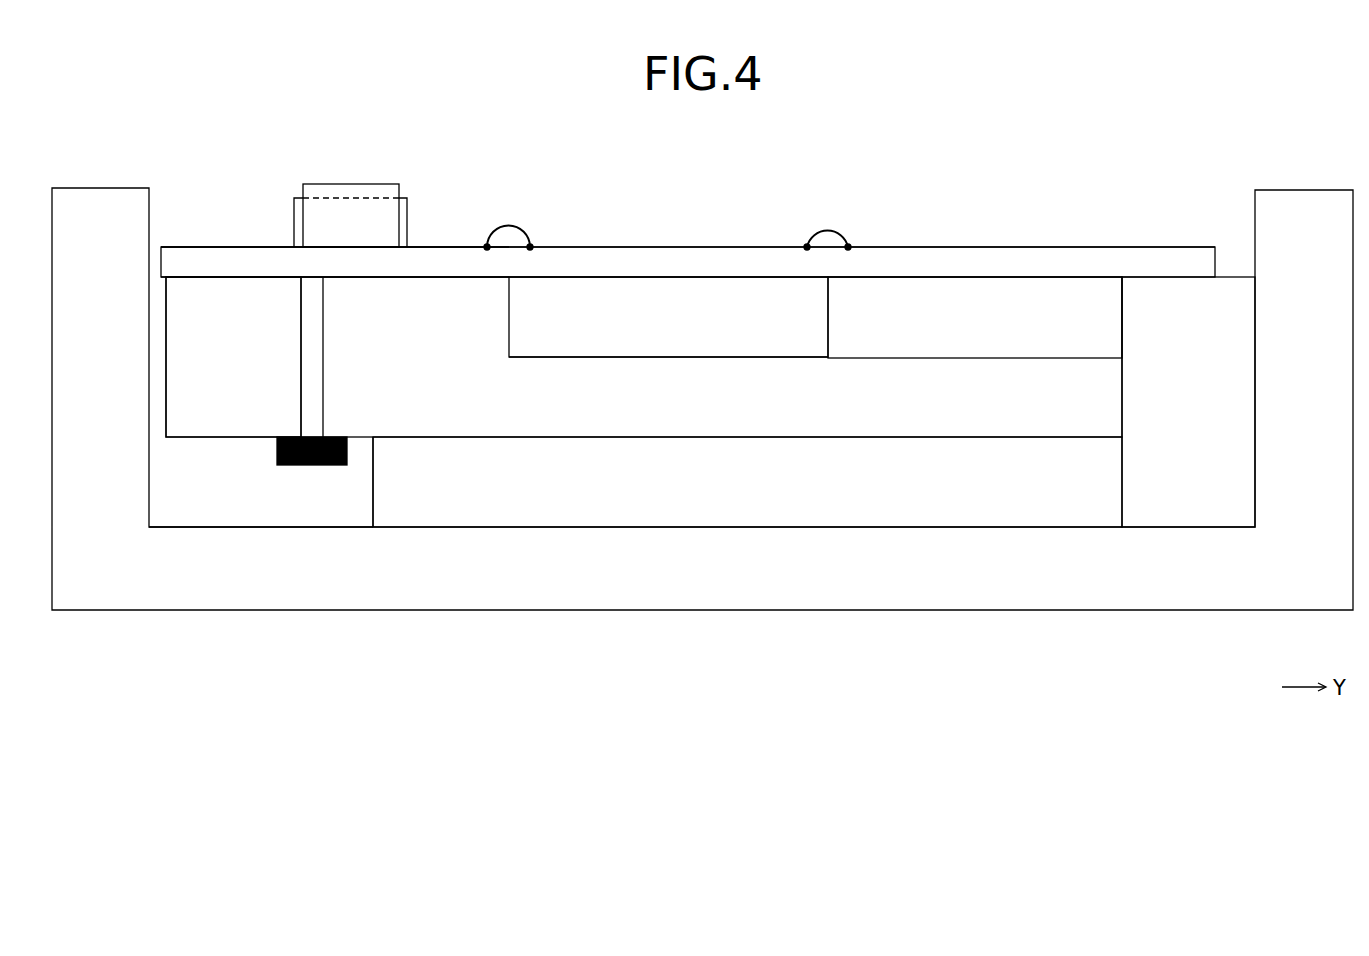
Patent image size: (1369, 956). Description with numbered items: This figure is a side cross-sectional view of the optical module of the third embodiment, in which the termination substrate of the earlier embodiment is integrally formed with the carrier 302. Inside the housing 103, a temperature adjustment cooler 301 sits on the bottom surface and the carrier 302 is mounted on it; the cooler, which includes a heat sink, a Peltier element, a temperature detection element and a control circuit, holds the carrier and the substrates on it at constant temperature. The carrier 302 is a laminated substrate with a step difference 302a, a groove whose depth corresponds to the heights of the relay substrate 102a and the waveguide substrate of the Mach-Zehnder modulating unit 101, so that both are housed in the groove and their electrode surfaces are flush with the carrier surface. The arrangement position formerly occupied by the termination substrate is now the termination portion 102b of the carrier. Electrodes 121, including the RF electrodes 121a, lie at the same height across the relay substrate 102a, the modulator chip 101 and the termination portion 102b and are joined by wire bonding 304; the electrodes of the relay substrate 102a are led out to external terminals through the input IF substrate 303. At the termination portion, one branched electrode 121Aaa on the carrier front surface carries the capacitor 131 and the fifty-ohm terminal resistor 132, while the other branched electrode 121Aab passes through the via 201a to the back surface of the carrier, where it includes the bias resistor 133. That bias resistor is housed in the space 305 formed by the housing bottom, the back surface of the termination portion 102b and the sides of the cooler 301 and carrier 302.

The housing 103 is at (1073, 598).
The temperature adjustment cooler 301 is at (923, 492).
The carrier 302 is at (560, 440).
The step difference 302a is at (785, 357).
The input IF substrate 303 is at (1195, 492).
The wire bonding 304 is at (508, 226).
The space 305 is at (291, 483).
The Mach-Zehnder modulating unit 101 is at (665, 292).
The relay substrate 102a is at (1086, 297).
The termination portion 102b is at (202, 349).
The electrodes 121 is at (888, 213).
The RF electrodes 121a is at (965, 262).
The branched electrode 121Aaa is at (257, 255).
The branched electrode 121Aab is at (277, 440).
The capacitor 131 is at (378, 184).
The terminal resistor 132 is at (294, 218).
The bias resistor 133 is at (318, 465).
The via 201a is at (310, 360).